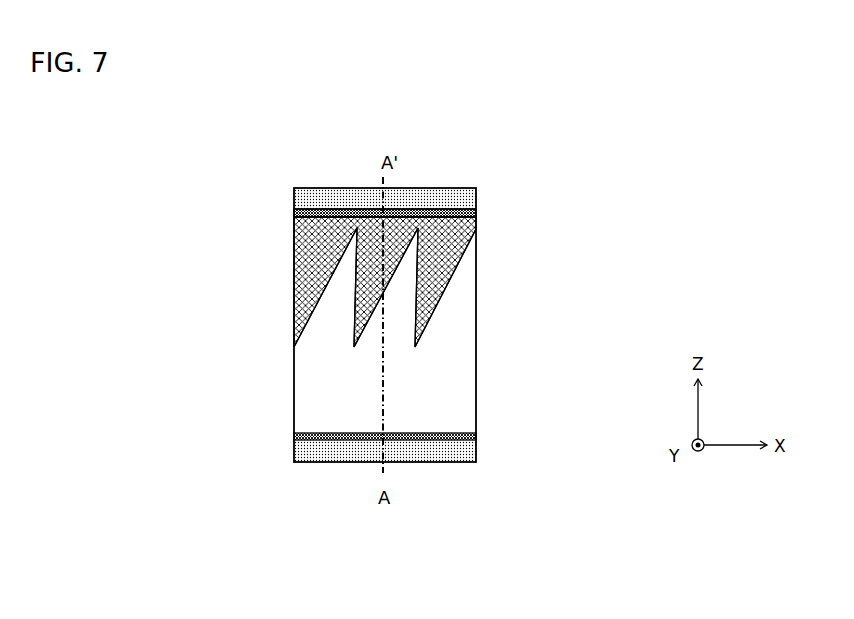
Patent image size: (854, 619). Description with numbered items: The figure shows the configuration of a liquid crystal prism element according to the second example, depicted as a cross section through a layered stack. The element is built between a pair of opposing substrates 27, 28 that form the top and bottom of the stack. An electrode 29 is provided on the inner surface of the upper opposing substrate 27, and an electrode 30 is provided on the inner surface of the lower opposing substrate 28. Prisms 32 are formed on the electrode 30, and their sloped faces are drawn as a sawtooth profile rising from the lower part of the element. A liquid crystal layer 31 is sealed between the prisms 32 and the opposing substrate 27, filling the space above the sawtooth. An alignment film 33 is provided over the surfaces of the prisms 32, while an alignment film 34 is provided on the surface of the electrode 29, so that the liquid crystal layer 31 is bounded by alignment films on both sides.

The opposing substrate 27 is at (465, 199).
The opposing substrate 28 is at (465, 452).
The electrode 29 is at (330, 213).
The electrode 30 is at (477, 435).
The liquid crystal layer 31 is at (467, 229).
The prisms 32 is at (460, 357).
The alignment film 33 is at (294, 308).
The alignment film 34 is at (294, 212).